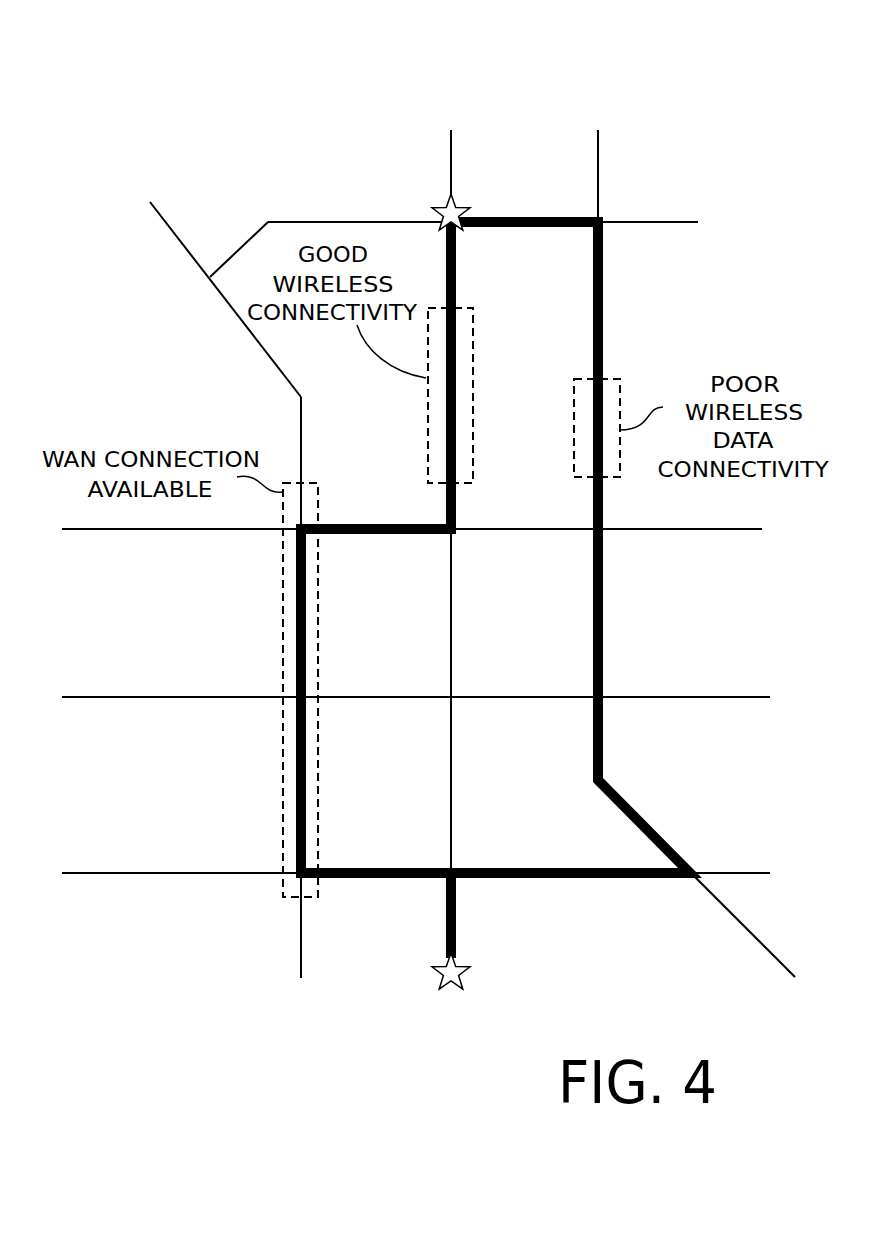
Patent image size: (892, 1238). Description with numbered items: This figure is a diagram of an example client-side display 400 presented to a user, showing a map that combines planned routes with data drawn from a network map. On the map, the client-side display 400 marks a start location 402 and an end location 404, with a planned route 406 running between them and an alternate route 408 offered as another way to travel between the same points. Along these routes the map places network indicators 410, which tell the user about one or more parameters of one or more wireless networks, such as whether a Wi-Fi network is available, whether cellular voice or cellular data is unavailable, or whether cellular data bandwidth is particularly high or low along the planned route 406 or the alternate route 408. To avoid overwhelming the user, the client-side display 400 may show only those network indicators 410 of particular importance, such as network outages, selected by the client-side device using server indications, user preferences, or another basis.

The client-side display 400 is at (643, 27).
The start location 402 is at (460, 972).
The end location 404 is at (433, 207).
The planned route 406 is at (603, 643).
The alternate route 408 is at (297, 638).
The network indicators 410 is at (471, 306).